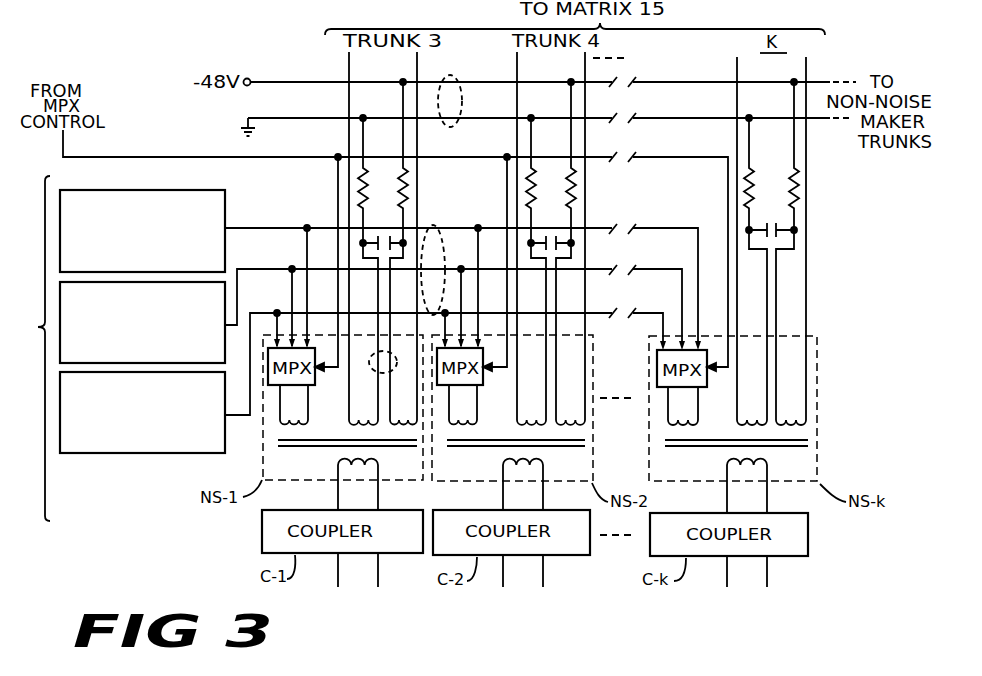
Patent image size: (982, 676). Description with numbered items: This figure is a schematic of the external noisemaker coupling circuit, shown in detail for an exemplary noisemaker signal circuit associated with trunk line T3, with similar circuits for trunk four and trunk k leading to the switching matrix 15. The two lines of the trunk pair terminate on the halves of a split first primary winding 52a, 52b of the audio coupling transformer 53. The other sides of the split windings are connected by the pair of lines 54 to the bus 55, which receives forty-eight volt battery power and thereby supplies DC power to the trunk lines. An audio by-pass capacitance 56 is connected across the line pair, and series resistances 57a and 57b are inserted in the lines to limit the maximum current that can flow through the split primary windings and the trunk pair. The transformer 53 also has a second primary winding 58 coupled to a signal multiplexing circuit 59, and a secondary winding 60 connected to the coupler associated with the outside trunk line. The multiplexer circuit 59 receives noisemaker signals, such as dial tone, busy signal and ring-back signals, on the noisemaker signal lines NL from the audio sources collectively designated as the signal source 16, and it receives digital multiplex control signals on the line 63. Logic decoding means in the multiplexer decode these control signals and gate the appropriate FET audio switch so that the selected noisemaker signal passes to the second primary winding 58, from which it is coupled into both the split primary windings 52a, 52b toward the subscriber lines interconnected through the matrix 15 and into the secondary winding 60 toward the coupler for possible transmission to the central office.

The switching matrix 15 is at (575, 29).
The signal source 16 is at (42, 327).
The split first primary winding half 52a is at (347, 430).
The split first primary winding half 52b is at (405, 433).
The audio coupling transformer 53 is at (400, 443).
The pair of lines 54 is at (396, 368).
The bus 55 is at (457, 125).
The audio by-pass capacitance 56 is at (381, 240).
The series resistance 57a is at (360, 180).
The series resistance 57b is at (408, 173).
The second primary winding 58 is at (282, 438).
The signal multiplexing circuit 59 is at (276, 347).
The secondary winding 60 is at (340, 458).
The multiplex control line 63 is at (205, 157).
The noisemaker signal lines NL is at (433, 226).